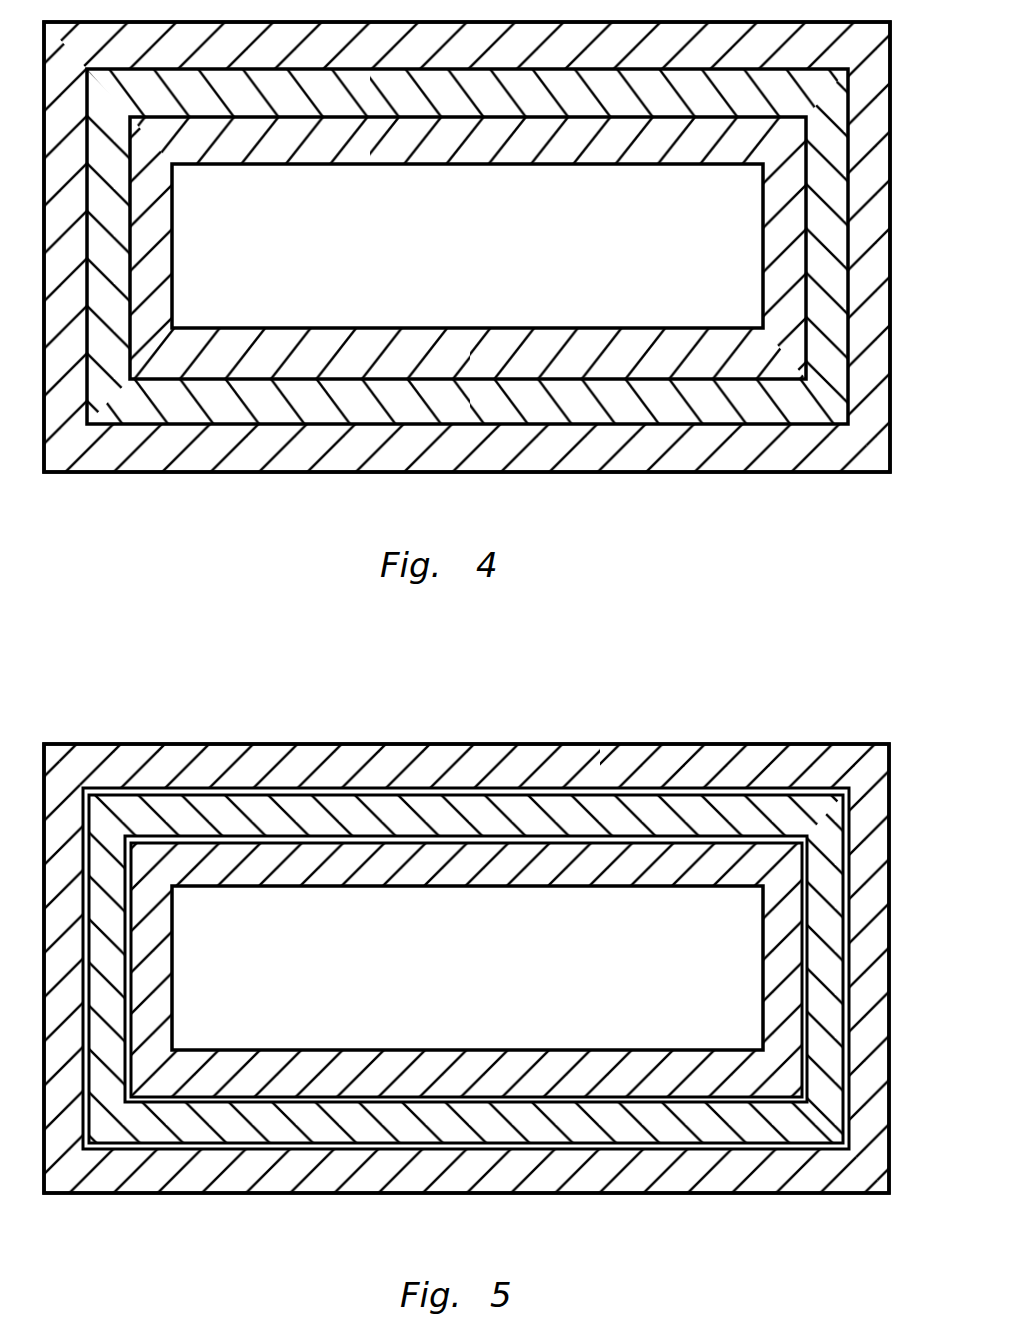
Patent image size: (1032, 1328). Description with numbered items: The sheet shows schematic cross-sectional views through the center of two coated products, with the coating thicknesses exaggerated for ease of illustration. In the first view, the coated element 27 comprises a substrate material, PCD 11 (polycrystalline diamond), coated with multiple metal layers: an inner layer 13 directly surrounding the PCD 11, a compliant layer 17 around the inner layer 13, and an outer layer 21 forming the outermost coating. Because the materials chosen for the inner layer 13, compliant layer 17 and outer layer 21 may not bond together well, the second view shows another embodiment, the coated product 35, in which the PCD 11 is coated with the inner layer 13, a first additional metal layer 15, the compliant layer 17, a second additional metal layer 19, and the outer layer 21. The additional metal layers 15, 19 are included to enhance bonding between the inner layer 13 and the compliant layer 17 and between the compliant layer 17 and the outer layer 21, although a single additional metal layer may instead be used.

In FIG. 4, the PCD 11 is at (217, 303).
In FIG. 5, the PCD 11 is at (255, 1015).
In FIG. 4, the inner layer 13 is at (315, 357).
In FIG. 5, the inner layer 13 is at (293, 1090).
In FIG. 5, the first additional metal layer 15 is at (337, 1098).
In FIG. 4, the compliant layer 17 is at (412, 407).
In FIG. 5, the compliant layer 17 is at (422, 1120).
In FIG. 5, the second additional metal layer 19 is at (472, 1147).
In FIG. 4, the outer layer 21 is at (543, 450).
In FIG. 5, the outer layer 21 is at (540, 1170).
In FIG. 4, the coated element 27 is at (904, 96).
In FIG. 5, the coated product 35 is at (843, 730).